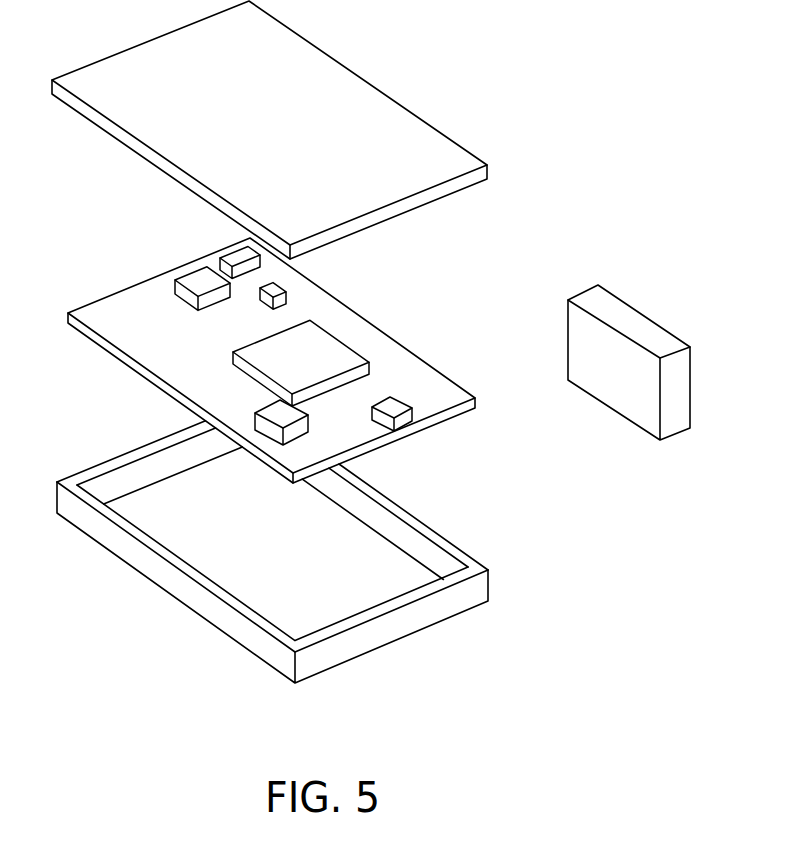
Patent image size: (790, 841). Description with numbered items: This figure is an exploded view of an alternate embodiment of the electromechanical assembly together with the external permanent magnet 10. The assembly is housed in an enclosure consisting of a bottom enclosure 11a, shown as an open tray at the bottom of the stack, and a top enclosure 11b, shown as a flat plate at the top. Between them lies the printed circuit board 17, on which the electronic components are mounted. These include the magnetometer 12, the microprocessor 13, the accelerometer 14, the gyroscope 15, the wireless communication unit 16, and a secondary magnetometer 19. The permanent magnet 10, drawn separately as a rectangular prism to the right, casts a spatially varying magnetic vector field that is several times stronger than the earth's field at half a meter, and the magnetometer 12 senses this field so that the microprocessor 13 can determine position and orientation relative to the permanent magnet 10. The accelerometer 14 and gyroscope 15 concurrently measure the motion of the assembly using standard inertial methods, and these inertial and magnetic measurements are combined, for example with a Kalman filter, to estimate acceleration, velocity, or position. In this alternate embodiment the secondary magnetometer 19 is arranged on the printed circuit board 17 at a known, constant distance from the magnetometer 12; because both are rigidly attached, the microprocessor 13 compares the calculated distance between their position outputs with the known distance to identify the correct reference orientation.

The permanent magnet 10 is at (608, 378).
The enclosure, bottom 11a is at (186, 588).
The enclosure, top 11b is at (432, 148).
The magnetometer 12 is at (240, 256).
The microprocessor 13 is at (285, 362).
The accelerometer 14 is at (277, 290).
The gyroscope 15 is at (202, 283).
The wireless communication unit 16 is at (305, 398).
The printed circuit board 17 is at (399, 365).
The secondary magnetometer 19 is at (390, 398).